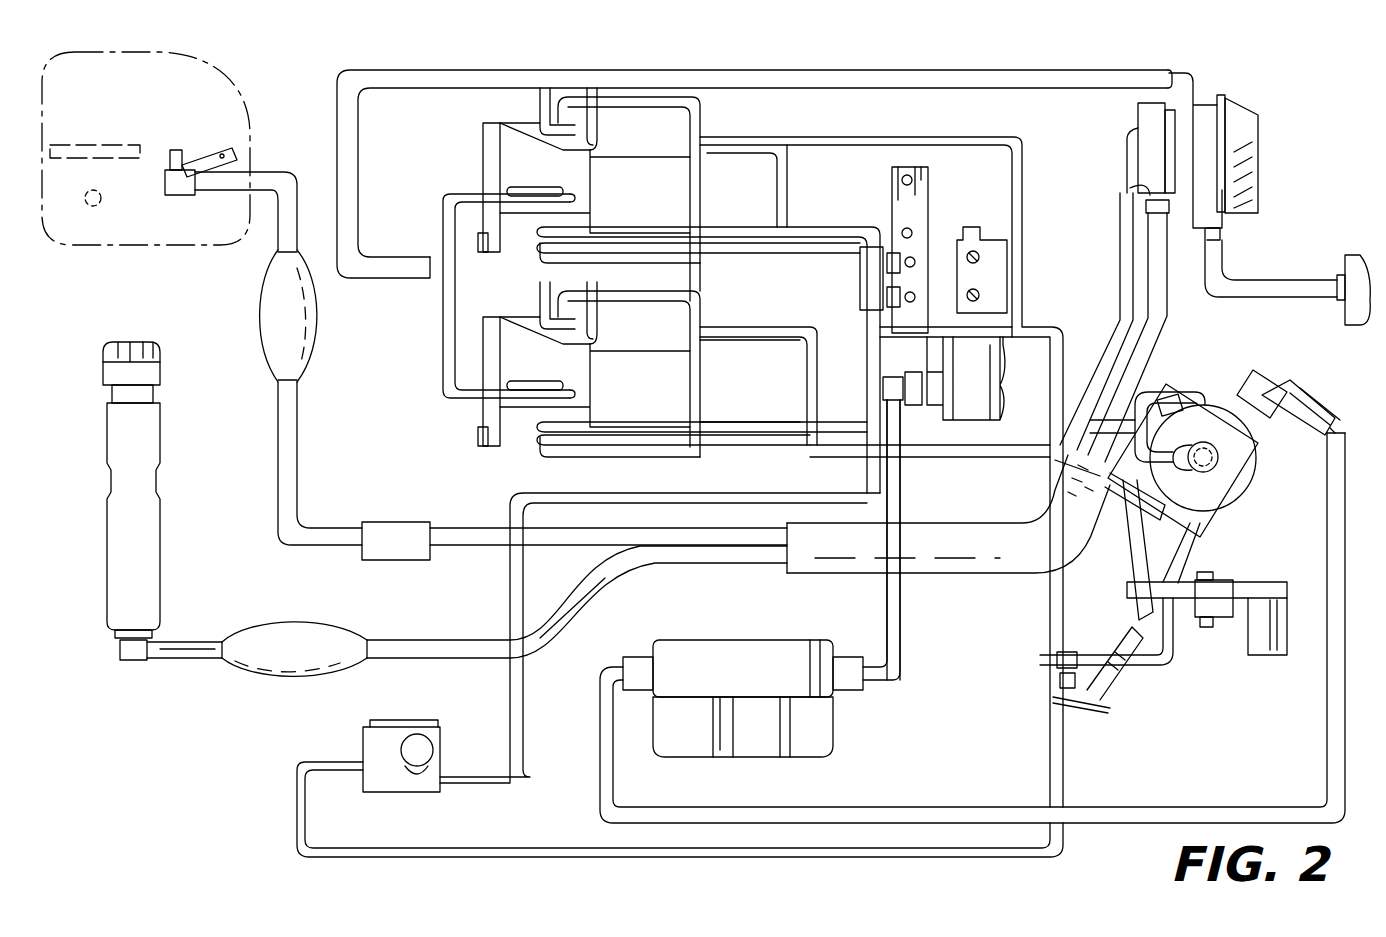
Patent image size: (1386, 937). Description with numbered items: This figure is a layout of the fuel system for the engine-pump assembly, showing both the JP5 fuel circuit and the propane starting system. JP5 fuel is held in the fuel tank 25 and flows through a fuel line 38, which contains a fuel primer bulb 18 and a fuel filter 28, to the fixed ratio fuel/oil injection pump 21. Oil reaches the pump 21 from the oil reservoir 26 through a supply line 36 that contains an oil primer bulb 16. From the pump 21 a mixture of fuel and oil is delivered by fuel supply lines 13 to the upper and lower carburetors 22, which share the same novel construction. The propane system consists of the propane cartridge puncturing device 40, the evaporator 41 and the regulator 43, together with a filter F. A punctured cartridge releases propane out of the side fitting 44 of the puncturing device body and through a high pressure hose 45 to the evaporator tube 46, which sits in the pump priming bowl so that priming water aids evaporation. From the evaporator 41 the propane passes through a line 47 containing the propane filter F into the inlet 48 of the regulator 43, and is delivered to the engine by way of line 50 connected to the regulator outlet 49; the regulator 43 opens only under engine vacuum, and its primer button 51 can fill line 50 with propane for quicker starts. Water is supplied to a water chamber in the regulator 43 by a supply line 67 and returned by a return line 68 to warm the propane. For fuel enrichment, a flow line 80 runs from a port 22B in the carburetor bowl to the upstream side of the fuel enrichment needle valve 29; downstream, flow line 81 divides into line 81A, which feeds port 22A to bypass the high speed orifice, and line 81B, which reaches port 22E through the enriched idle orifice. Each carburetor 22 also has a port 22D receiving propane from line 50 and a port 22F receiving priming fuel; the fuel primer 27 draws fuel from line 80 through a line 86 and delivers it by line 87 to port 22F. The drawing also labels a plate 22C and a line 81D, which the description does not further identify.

The fuel supply lines 13 is at (1010, 75).
The oil primer bulb 16 is at (281, 630).
The fuel primer bulb 18 is at (262, 350).
The fixed ratio fuel/oil injection pump 21 is at (1200, 95).
The carburetor 22 is at (483, 172).
The port 22A is at (537, 248).
The port 22B is at (537, 232).
The filter plate 22C is at (572, 187).
The port 22D is at (572, 150).
The port 22E is at (547, 88).
The port 22F is at (594, 138).
The fuel tank 25 is at (170, 72).
The oil reservoir 26 is at (152, 433).
The fuel primer 27 is at (370, 742).
The fuel filter 28 is at (392, 552).
The fuel enrichment needle valve 29 is at (910, 297).
The oil supply line 36 is at (417, 640).
The fuel line 38 is at (278, 490).
The propane cartridge puncturing device 40 is at (987, 217).
The evaporator 41 is at (789, 614).
The regulator 43 is at (1239, 380).
The side fitting 44 is at (915, 405).
The high pressure hose 45 is at (904, 630).
The evaporator tube 46 is at (852, 677).
The line 47 is at (1022, 773).
The inlet 48 is at (1245, 452).
The regulator outlet 49 is at (1067, 535).
The line 50 is at (662, 150).
The primer button 51 is at (1236, 484).
The supply line 67 is at (1127, 562).
The return line 68 is at (1156, 667).
The flow line 80 is at (806, 227).
The flow line 81 is at (784, 335).
The line 81A is at (634, 263).
The line 81B is at (700, 190).
The fuel line 81D is at (705, 120).
The line 86 is at (656, 497).
The line 87 is at (992, 135).
The propane filter F is at (1322, 382).